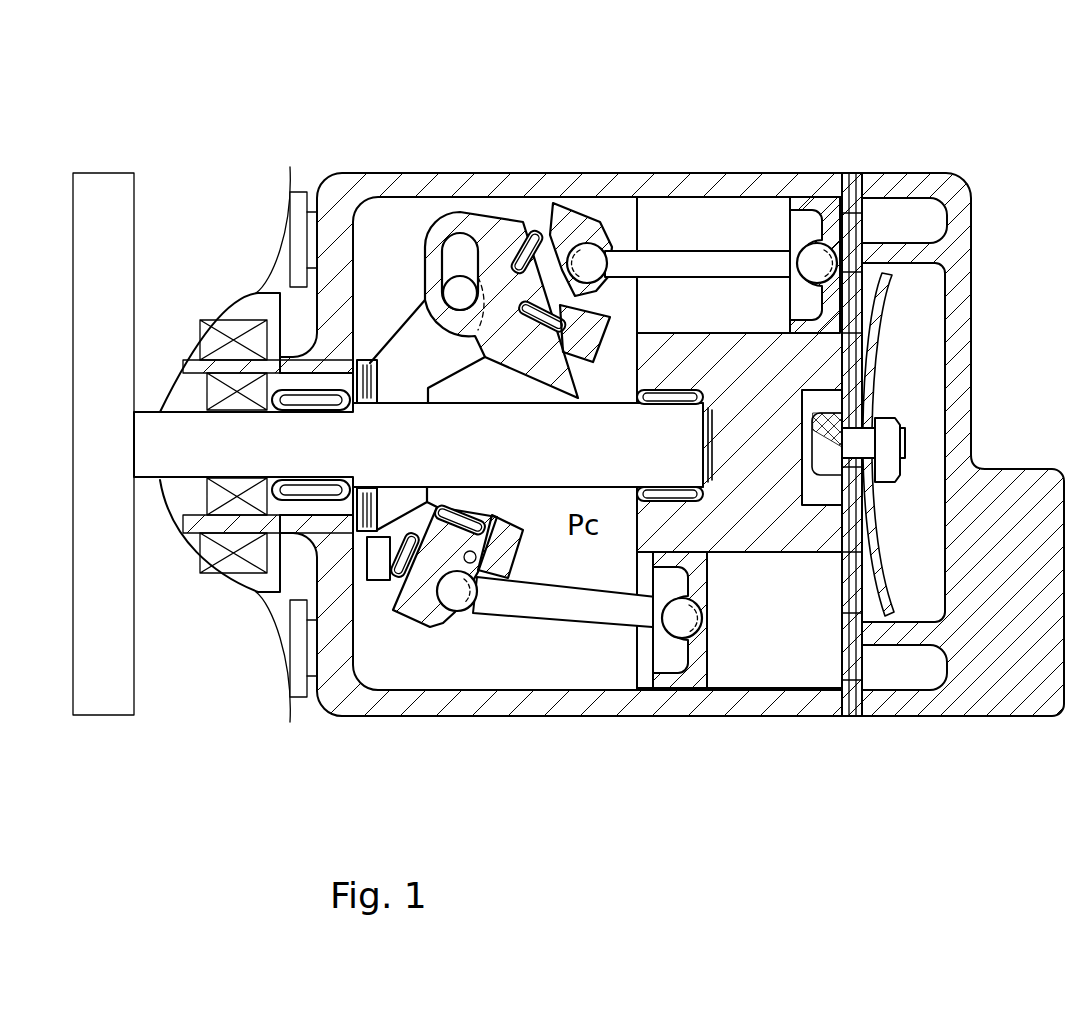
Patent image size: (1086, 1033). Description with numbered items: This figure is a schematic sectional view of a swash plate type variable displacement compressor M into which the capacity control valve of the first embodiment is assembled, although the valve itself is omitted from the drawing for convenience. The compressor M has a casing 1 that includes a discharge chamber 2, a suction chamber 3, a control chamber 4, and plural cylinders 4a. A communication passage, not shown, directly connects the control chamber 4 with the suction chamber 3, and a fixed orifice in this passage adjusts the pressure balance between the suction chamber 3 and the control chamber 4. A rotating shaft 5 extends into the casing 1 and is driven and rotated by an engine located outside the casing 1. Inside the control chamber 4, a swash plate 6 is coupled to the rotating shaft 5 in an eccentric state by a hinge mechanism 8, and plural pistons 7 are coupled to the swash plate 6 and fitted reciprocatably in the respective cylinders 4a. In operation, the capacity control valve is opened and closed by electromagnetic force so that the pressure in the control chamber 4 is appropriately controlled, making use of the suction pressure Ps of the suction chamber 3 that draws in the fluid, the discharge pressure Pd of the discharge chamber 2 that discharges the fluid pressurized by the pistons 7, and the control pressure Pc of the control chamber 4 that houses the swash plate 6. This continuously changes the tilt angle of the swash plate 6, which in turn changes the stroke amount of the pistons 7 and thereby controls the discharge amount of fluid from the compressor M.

The variable displacement compressor M is at (949, 96).
The casing 1 is at (362, 162).
The discharge chamber 2 is at (920, 366).
The suction chamber 3 is at (940, 222).
The control chamber 4 is at (557, 667).
The cylinders 4a is at (717, 213).
The rotating shaft 5 is at (390, 460).
The swash plate 6 is at (548, 330).
The pistons 7 is at (822, 195).
The hinge mechanism 8 is at (390, 360).